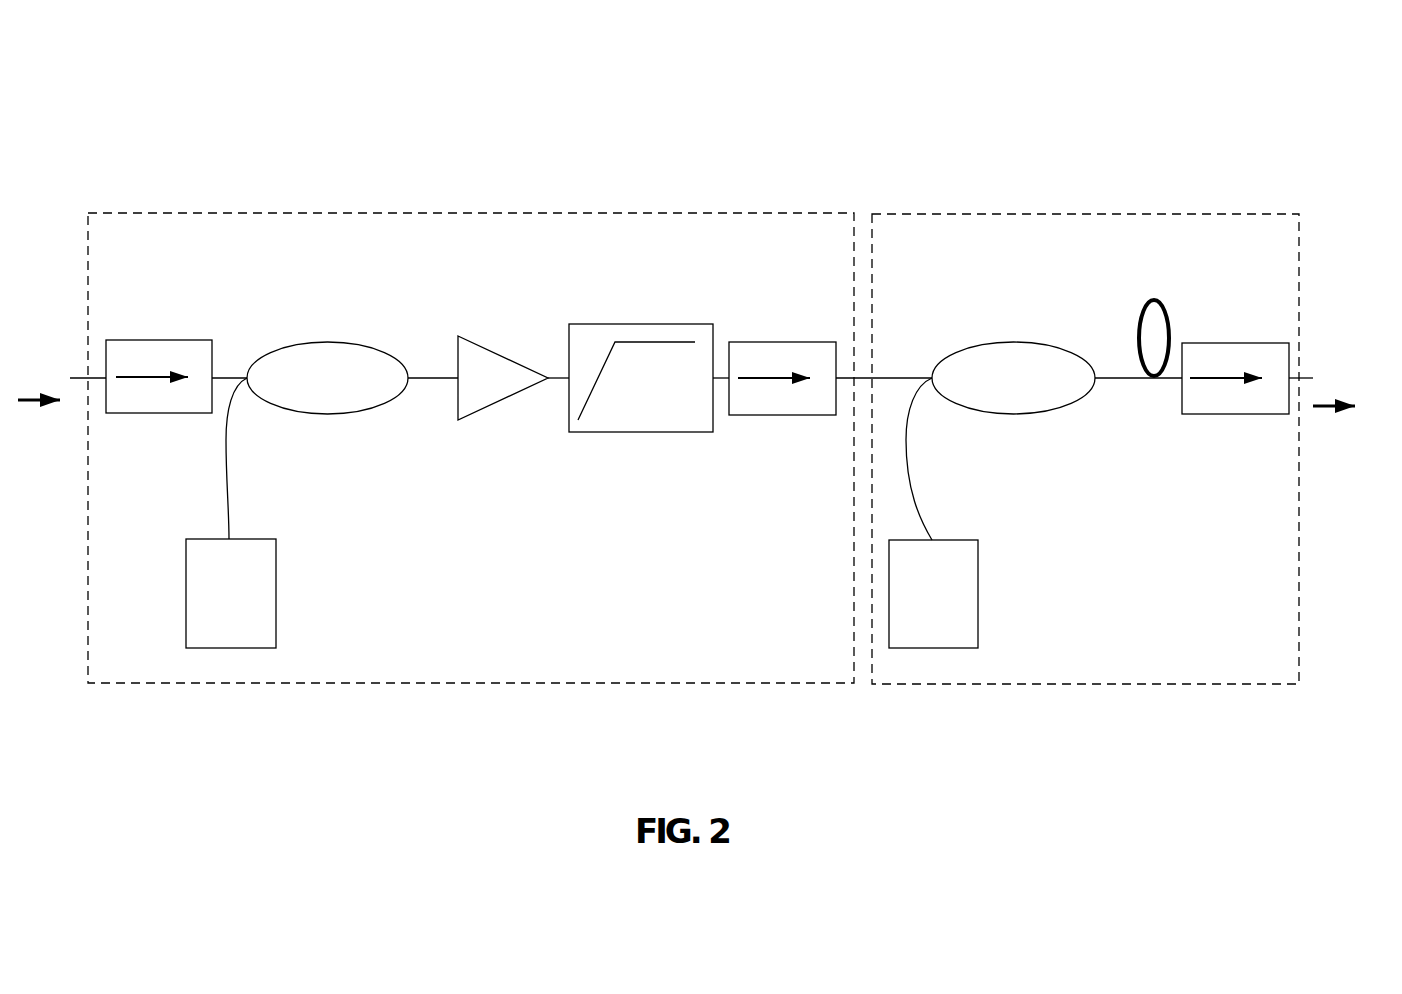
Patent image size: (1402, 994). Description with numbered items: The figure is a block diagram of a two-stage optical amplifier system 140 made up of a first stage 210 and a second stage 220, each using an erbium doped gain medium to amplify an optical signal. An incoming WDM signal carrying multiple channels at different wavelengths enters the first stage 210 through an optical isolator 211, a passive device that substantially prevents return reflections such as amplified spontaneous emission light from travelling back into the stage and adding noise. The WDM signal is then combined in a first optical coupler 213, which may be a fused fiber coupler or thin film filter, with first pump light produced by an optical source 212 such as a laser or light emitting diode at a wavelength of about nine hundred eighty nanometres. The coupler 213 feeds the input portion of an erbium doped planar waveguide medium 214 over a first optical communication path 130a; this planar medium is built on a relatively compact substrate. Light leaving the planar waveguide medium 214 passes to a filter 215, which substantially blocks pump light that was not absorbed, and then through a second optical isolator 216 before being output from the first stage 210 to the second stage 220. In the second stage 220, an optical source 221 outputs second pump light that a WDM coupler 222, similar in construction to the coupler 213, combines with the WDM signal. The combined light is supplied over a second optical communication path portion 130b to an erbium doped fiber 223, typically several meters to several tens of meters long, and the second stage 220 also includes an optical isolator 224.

The two-stage optical amplifier system 140 is at (1192, 45).
The first stage 210 is at (745, 211).
The optical isolator 211 is at (208, 338).
The optical source 212 is at (175, 568).
The first optical coupler 213 is at (333, 341).
The first optical communication path 130a is at (431, 369).
The planar waveguide medium 214 is at (477, 337).
The filter 215 is at (642, 323).
The second optical isolator 216 is at (774, 339).
The second stage 220 is at (1264, 211).
The optical source 221 is at (984, 544).
The WDM coupler 222 is at (969, 341).
The second optical communication path portion 130b is at (1108, 369).
The erbium doped fiber 223 is at (1173, 317).
The optical isolator 224 is at (1236, 416).